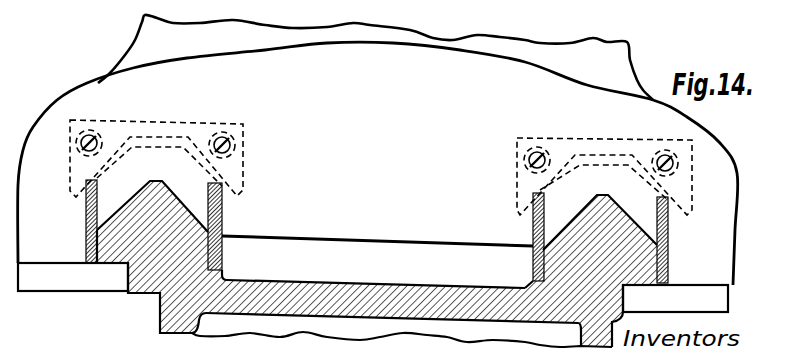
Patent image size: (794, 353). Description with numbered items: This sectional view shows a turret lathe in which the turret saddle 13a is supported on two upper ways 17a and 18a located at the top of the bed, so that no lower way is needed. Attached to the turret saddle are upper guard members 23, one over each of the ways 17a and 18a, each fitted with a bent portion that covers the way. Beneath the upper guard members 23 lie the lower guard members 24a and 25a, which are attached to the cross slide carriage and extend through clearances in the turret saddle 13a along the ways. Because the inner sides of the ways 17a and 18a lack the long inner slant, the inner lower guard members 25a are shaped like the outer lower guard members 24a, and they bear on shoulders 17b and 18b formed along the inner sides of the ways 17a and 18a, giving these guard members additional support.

The turret saddle 13a is at (110, 106).
The upper guard members 23 is at (205, 125).
The upper way 18a is at (160, 210).
The shoulder 18b is at (228, 271).
The upper way 17a is at (612, 233).
The shoulder 17b is at (533, 281).
The lower guard members 24a is at (86, 228).
The lower guard members 25a is at (225, 223).